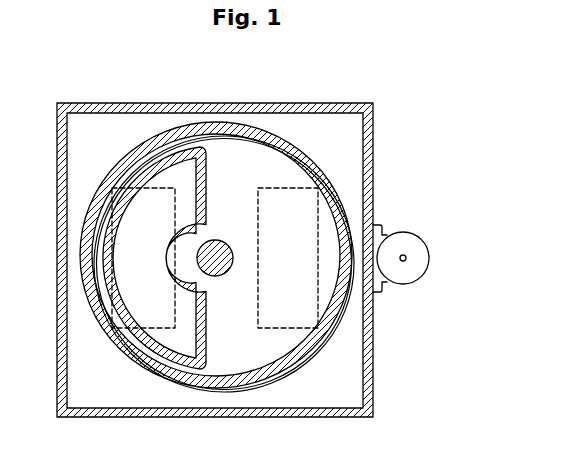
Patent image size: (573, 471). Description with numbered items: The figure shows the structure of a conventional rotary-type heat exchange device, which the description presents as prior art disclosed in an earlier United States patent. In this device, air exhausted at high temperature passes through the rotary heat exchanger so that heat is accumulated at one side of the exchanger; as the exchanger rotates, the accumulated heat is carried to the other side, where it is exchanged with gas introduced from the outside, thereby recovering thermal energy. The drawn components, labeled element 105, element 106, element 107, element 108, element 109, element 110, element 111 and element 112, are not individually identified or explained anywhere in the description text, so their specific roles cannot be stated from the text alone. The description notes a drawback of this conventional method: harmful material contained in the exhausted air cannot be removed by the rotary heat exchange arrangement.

The rotor body 105 is at (179, 363).
The motor 106 is at (402, 233).
The magnet 107 is at (280, 188).
The housing 108 is at (216, 220).
The outer ring 109 is at (232, 122).
The coil 110 is at (161, 190).
The inner ring 111 is at (100, 187).
The shaft 112 is at (218, 277).